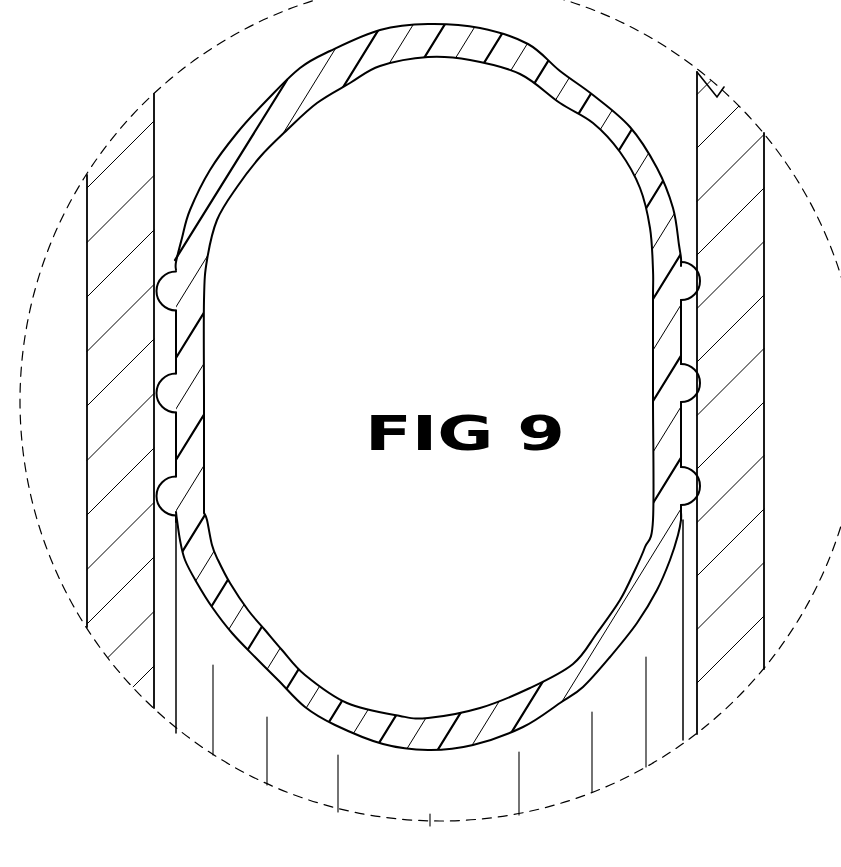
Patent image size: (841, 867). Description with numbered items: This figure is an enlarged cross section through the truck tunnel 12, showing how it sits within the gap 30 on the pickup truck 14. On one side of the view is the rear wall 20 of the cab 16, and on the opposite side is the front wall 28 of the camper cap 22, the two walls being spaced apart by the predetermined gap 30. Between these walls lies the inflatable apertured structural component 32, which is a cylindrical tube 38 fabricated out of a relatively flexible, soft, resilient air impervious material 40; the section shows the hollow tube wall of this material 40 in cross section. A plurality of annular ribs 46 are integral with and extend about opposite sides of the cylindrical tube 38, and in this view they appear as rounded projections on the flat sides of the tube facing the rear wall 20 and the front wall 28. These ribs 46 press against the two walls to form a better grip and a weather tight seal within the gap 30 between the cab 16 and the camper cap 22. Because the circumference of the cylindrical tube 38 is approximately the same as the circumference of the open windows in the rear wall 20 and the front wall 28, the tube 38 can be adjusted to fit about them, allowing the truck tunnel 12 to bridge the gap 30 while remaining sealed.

The truck tunnel 12 is at (305, 50).
The pickup truck 14 is at (737, 97).
The cab 16 is at (743, 690).
The rear wall 20 is at (750, 443).
The camper cap 22 is at (115, 672).
The front wall 28 is at (107, 456).
The gap 30 is at (173, 190).
The inflatable apertured structural component 32 is at (627, 127).
The cylindrical tube 38 is at (247, 748).
The air impervious material 40 is at (555, 76).
The annular ribs 46 is at (167, 297).